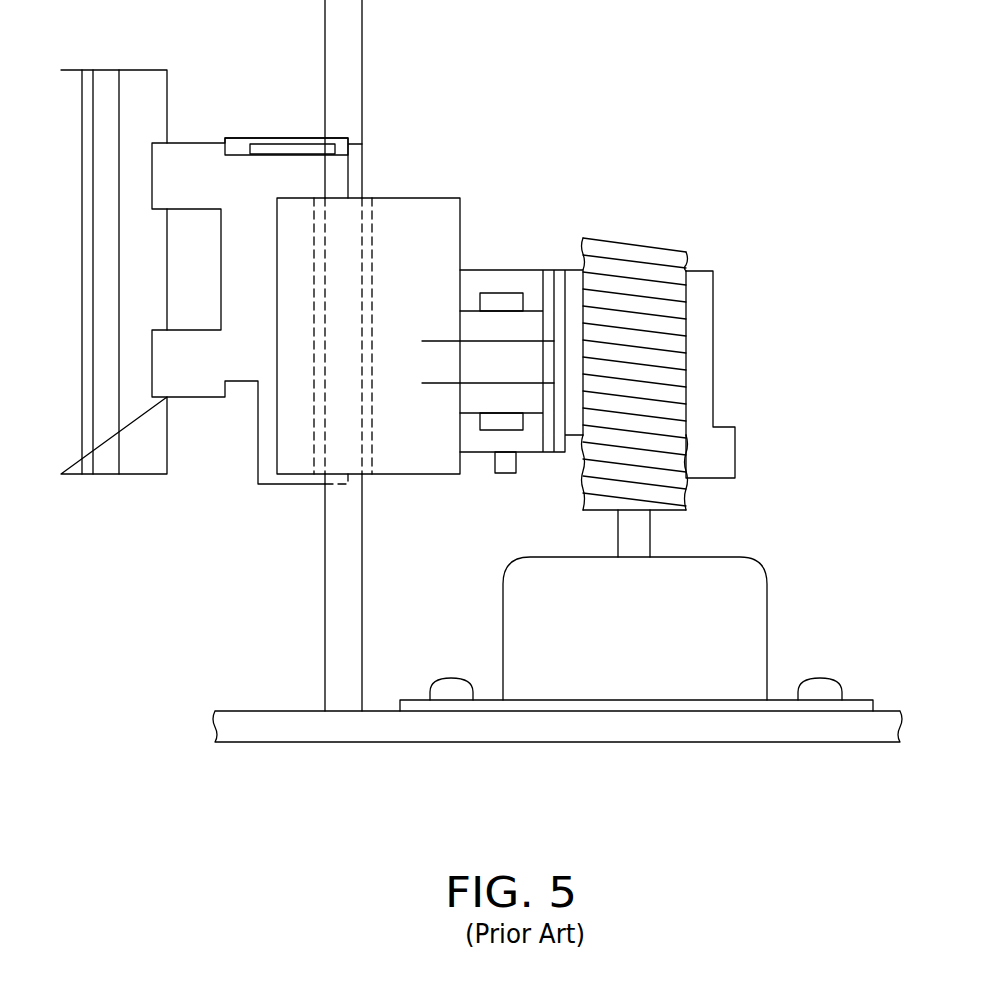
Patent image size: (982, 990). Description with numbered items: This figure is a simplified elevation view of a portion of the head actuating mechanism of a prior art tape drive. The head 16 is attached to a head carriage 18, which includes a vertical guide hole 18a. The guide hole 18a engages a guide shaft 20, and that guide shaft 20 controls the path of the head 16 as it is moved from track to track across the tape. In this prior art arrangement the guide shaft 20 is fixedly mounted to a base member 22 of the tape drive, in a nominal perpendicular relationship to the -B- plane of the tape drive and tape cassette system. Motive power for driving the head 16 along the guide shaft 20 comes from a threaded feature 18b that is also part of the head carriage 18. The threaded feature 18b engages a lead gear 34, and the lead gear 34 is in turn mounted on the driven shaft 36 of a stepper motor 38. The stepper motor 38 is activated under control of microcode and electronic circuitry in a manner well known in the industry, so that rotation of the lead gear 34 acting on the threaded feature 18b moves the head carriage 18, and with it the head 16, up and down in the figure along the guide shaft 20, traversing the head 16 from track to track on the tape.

The head 16 is at (108, 477).
The head carriage 18 is at (293, 487).
The vertical guide hole 18a is at (372, 272).
The threaded feature 18b is at (688, 351).
The guide shaft 20 is at (362, 83).
The base member 22 is at (645, 723).
The lead gear 34 is at (633, 255).
The driven shaft 36 is at (650, 535).
The stepper motor 38 is at (735, 620).